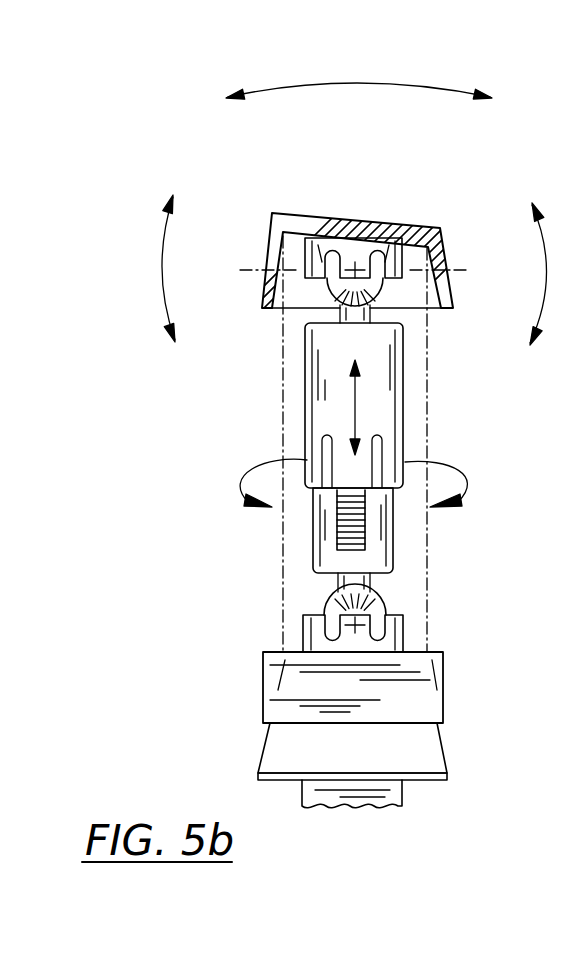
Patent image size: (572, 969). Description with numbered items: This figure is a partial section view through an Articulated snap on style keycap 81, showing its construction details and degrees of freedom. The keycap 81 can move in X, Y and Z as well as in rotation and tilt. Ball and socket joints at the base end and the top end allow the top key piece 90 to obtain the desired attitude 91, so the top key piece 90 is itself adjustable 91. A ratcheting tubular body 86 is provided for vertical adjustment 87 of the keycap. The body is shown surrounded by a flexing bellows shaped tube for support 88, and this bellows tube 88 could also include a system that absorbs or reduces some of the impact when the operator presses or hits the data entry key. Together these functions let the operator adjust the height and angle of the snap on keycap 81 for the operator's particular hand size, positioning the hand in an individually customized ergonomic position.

The Articulated snap on style keycap 81 is at (361, 469).
The ratcheting tubular body 86 is at (367, 527).
The vertical adjustment 87 is at (348, 405).
The bellows shaped tube 88 is at (428, 372).
The top key piece 90 is at (305, 212).
The desired attitude 91 is at (160, 270).